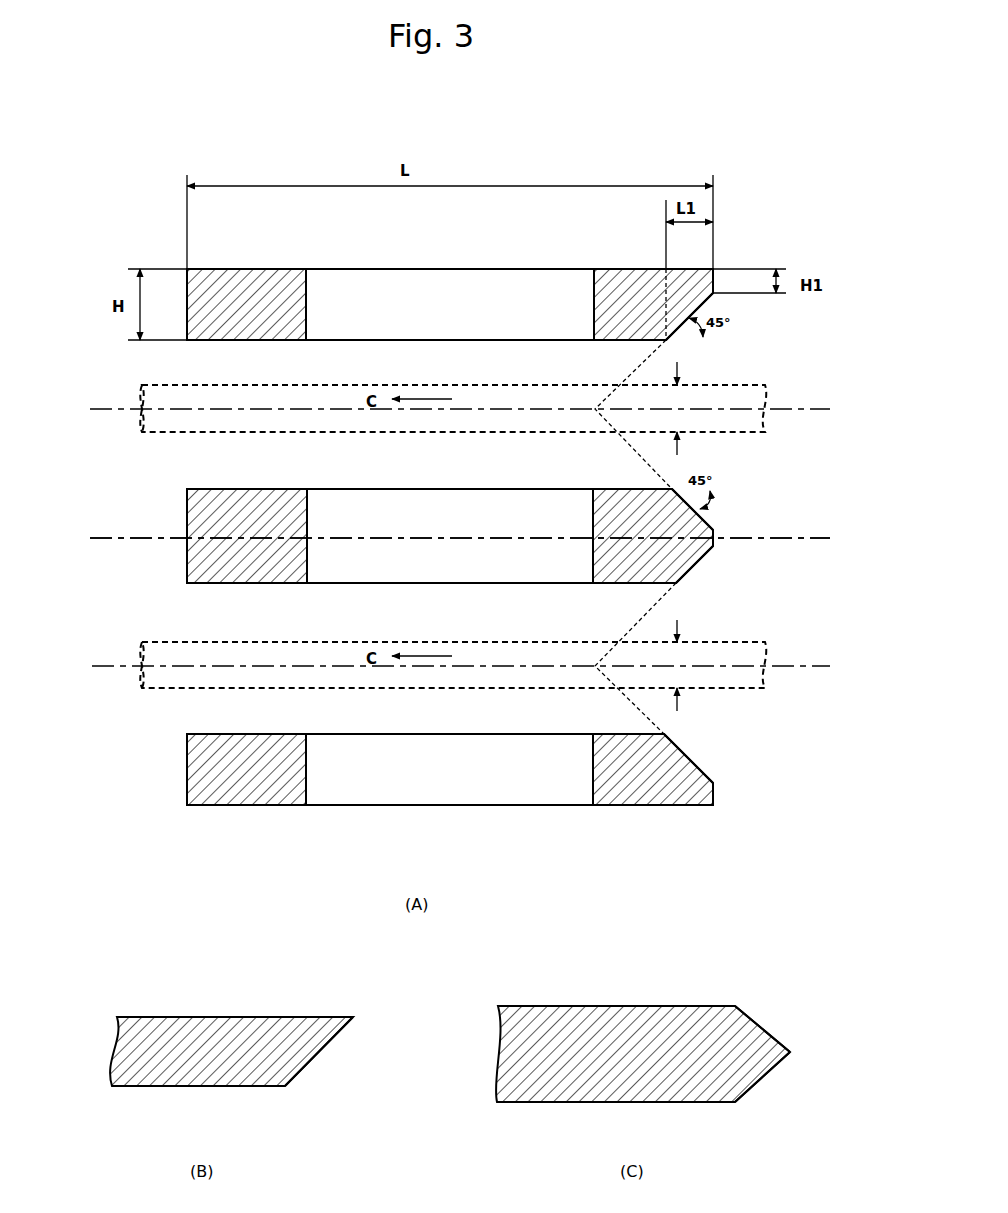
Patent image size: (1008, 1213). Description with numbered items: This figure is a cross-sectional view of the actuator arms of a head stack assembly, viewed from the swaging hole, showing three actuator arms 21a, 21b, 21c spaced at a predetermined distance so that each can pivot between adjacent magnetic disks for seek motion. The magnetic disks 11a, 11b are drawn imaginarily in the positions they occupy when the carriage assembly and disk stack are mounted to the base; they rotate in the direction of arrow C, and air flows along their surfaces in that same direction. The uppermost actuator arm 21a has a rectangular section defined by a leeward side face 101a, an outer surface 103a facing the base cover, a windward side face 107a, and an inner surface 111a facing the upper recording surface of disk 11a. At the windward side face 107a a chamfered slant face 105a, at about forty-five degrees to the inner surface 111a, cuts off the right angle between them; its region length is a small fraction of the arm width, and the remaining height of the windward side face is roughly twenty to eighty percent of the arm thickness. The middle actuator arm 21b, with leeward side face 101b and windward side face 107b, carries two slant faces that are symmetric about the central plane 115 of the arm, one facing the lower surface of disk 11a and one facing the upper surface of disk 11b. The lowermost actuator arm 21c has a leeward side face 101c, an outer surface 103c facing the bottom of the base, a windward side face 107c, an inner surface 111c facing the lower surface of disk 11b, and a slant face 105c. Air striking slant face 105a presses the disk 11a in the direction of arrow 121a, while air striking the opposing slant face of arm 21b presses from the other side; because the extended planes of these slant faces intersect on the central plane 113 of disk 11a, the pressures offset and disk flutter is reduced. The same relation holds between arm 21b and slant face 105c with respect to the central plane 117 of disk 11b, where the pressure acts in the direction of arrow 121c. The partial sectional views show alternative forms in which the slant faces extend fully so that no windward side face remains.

The actuator arm 21a is at (262, 310).
The actuator arm 21b is at (262, 530).
The actuator arm 21c is at (255, 776).
The leeward side face 101a is at (187, 286).
The leeward side face 101b is at (187, 513).
The leeward side face 101c is at (187, 789).
The outer surface 103a is at (336, 269).
The outer surface 103c is at (421, 805).
The slant face 105a is at (698, 306).
The slant face 105c is at (684, 754).
The windward side face 107a is at (713, 283).
The windward side face 107b is at (713, 538).
The windward side face 107c is at (713, 794).
The inner surface 111a is at (330, 340).
The inner surface 111c is at (421, 734).
The central plane 113 is at (810, 409).
The central plane 115 is at (810, 538).
The central plane 117 is at (810, 666).
The magnetic disk 11a is at (142, 392).
The magnetic disk 11b is at (142, 647).
The arrow 121a is at (701, 373).
The arrow 121c is at (705, 701).